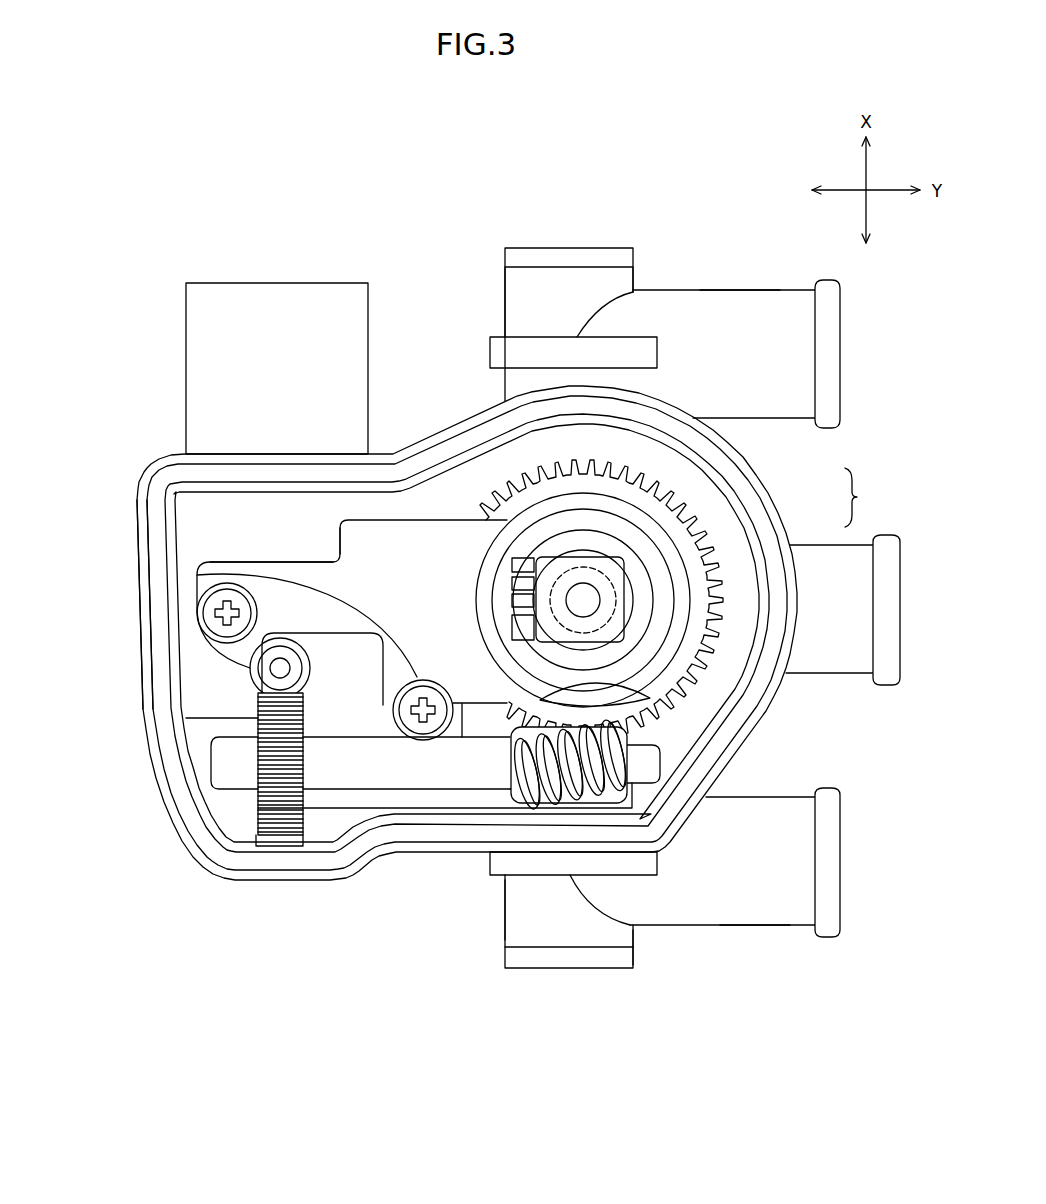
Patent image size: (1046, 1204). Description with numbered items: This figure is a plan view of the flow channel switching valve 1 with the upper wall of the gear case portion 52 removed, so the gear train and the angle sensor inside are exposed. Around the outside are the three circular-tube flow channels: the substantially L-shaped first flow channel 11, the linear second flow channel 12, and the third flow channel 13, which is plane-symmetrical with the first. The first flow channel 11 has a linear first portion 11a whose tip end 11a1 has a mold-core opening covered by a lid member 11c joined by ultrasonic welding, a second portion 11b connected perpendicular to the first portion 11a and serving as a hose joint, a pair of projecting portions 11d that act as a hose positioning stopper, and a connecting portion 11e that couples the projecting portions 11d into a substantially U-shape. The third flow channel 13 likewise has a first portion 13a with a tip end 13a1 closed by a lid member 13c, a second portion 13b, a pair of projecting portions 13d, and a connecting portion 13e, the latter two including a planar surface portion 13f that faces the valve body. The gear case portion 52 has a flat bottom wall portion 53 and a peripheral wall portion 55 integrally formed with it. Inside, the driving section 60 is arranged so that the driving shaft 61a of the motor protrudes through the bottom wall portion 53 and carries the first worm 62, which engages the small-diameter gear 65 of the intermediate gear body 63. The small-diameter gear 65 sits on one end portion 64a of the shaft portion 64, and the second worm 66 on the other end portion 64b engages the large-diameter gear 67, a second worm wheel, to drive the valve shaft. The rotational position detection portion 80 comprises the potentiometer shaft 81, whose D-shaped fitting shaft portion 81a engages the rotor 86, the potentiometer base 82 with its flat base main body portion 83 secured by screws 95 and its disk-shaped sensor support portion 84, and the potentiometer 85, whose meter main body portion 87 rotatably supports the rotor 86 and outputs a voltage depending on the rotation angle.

The flow channel switching valve 1 is at (230, 206).
The first flow channel 11 is at (795, 928).
The first portion 11a is at (507, 913).
The tip end 11a1 is at (640, 950).
The second portion 11b is at (735, 925).
The lid member 11c is at (603, 960).
The pair of projecting portions 11d is at (560, 880).
The connecting portion 11e is at (505, 905).
The second flow channel 12 is at (850, 675).
The third flow channel 13 is at (790, 298).
The first portion 13a is at (497, 353).
The tip end 13a1 is at (640, 262).
The second portion 13b is at (740, 300).
The lid member 13c is at (604, 258).
The pair of projecting portions 13d is at (573, 353).
The connecting portion 13e is at (507, 305).
The planar surface portion 13f is at (537, 373).
The gear case portion 52 is at (137, 505).
The bottom wall portion 53 is at (215, 512).
The peripheral wall portion 55 is at (150, 505).
The driving section 60 is at (320, 805).
The driving shaft 61a is at (270, 668).
The first worm 62 is at (252, 676).
The intermediate gear body 63 is at (537, 800).
The shaft portion 64 is at (388, 792).
The one end portion 64a is at (240, 783).
The other end portion 64b is at (645, 780).
The small-diameter gear 65 is at (282, 813).
The second worm 66 is at (523, 806).
The large-diameter gear 67 is at (702, 673).
The rotational position detection portion 80 is at (210, 556).
The potentiometer shaft 81 is at (600, 597).
The fitting shaft portion 81a is at (583, 600).
The potentiometer base 82 is at (378, 378).
The base main body portion 83 is at (353, 545).
The sensor support portion 84 is at (500, 505).
The potentiometer 85 is at (866, 497).
The rotor 86 is at (630, 545).
The meter main body portion 87 is at (630, 612).
The screws 95 is at (410, 665).